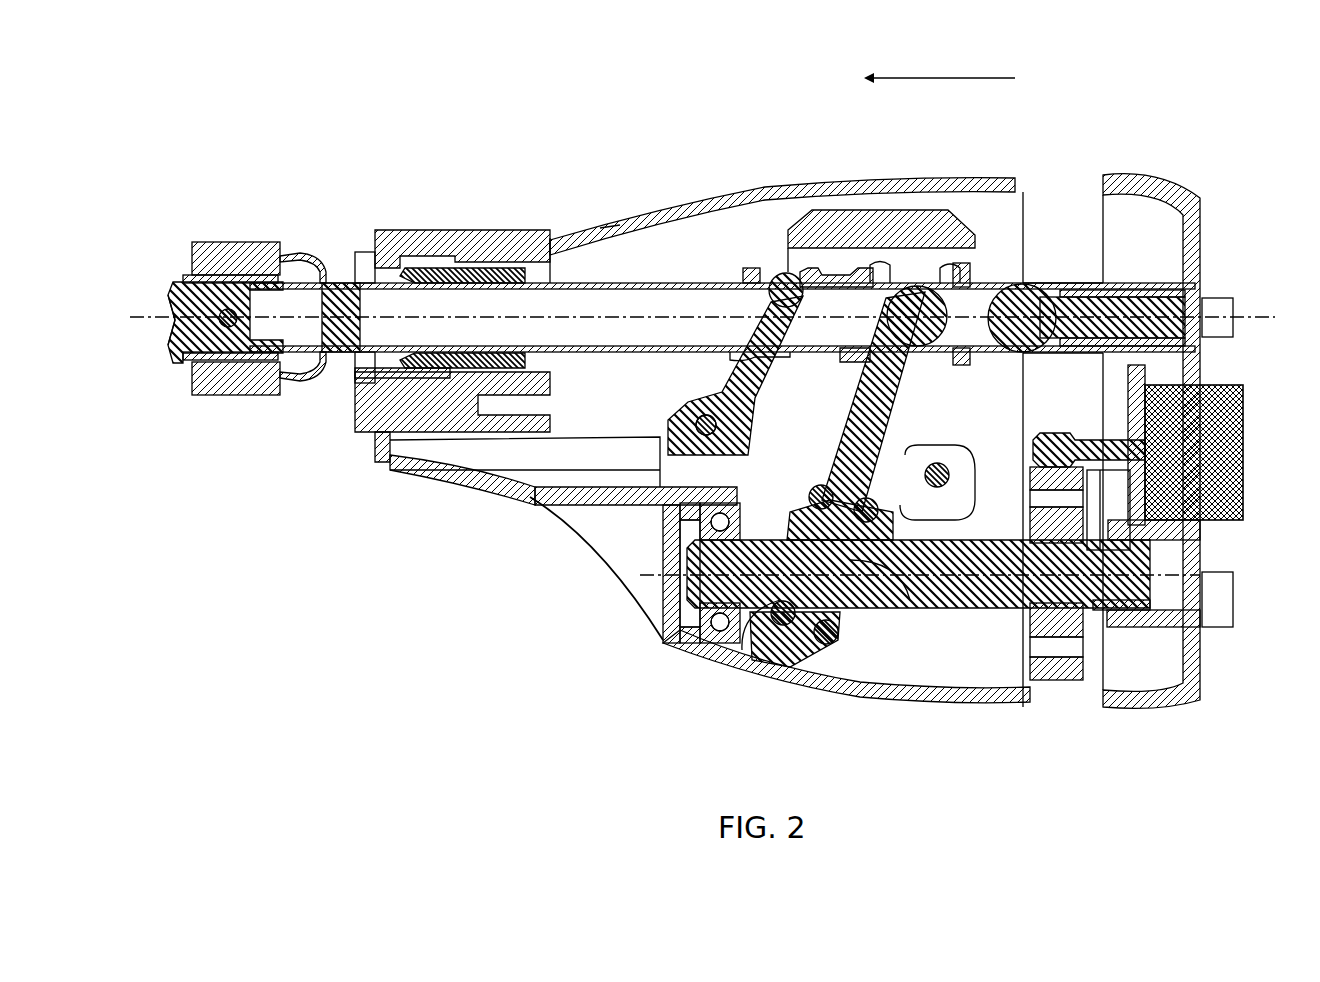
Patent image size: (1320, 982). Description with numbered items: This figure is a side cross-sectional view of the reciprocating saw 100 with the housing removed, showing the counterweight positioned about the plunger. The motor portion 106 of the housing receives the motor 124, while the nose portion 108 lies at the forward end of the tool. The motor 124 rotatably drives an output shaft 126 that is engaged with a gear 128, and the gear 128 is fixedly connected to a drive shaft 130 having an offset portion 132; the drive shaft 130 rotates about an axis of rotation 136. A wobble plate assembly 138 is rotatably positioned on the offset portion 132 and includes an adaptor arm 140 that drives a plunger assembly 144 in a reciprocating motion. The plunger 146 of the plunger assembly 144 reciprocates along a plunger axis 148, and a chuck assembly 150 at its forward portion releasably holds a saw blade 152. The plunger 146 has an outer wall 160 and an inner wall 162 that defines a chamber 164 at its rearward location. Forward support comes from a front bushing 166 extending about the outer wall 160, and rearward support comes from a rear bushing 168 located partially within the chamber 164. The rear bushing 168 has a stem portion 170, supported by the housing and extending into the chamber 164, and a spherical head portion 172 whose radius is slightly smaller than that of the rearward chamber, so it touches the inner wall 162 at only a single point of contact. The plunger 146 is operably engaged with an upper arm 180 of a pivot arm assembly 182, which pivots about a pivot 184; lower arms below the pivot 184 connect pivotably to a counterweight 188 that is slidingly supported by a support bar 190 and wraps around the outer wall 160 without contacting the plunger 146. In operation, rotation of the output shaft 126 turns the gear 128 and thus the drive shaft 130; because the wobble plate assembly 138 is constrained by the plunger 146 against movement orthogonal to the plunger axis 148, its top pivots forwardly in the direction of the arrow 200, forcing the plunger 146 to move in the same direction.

The reciprocating saw 100 is at (418, 102).
The arrow 200 is at (960, 78).
The motor portion 106 is at (1157, 180).
The nose portion 108 is at (745, 177).
The motor 124 is at (1252, 445).
The output shaft 126 is at (1060, 433).
The gear 128 is at (1040, 680).
The drive shaft 130 is at (970, 607).
The offset portion 132 is at (890, 605).
The axis of rotation 136 is at (648, 575).
The wobble plate assembly 138 is at (773, 680).
The adaptor arm 140 is at (915, 285).
The plunger assembly 144 is at (707, 224).
The plunger 146 is at (620, 280).
The plunger axis 148 is at (160, 300).
The chuck assembly 150 is at (270, 240).
The saw blade 152 is at (172, 365).
The outer wall 160 is at (540, 275).
The inner wall 162 is at (375, 384).
The chamber 164 is at (1000, 290).
The front bushing 166 is at (480, 265).
The rear bushing 168 is at (1048, 204).
The stem portion 170 is at (1183, 305).
The head portion 172 is at (1038, 283).
The upper arm 180 is at (775, 275).
The pivot arm assembly 182 is at (712, 304).
The pivot 184 is at (660, 437).
The counterweight 188 is at (865, 210).
The support bar 190 is at (940, 495).